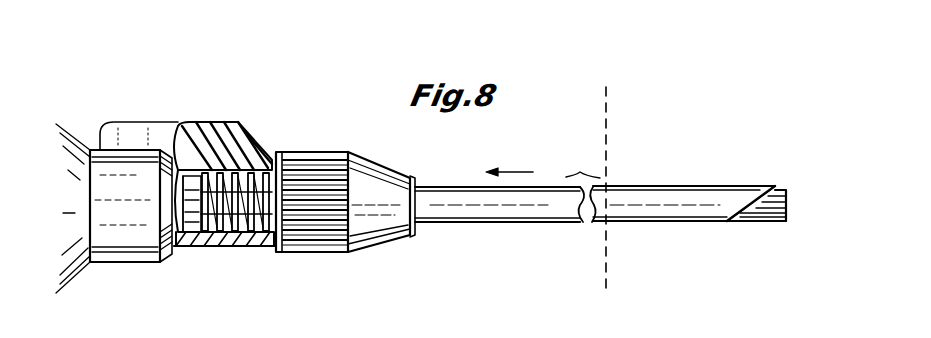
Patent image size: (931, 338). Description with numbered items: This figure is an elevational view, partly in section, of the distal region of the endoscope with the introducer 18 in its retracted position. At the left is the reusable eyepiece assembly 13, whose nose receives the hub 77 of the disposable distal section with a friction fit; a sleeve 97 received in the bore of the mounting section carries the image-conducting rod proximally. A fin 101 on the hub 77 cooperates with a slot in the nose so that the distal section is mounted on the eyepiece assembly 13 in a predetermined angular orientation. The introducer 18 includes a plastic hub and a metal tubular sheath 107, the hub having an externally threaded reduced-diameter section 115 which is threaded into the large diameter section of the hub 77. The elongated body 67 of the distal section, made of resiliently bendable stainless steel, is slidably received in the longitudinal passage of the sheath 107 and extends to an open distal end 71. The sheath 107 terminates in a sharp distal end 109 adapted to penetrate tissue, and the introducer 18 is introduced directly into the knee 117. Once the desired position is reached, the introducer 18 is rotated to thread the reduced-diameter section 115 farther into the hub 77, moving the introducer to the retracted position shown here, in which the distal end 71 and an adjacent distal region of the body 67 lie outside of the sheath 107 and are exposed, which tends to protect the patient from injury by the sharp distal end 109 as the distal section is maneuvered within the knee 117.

The eyepiece assembly 13 is at (88, 110).
The sleeve 97 is at (176, 204).
The hub 77 is at (187, 252).
The fin 101 is at (214, 128).
The externally threaded reduced-diameter section 115 is at (232, 212).
The introducer 18 is at (392, 162).
The tubular sheath 107 is at (486, 212).
The knee 117 is at (608, 116).
The sharp distal end 109 is at (774, 186).
The elongated body 67 is at (765, 214).
The open distal end 71 is at (788, 204).